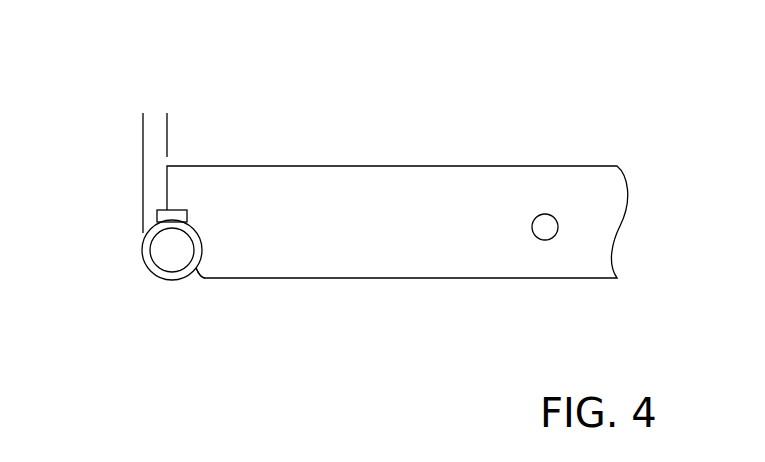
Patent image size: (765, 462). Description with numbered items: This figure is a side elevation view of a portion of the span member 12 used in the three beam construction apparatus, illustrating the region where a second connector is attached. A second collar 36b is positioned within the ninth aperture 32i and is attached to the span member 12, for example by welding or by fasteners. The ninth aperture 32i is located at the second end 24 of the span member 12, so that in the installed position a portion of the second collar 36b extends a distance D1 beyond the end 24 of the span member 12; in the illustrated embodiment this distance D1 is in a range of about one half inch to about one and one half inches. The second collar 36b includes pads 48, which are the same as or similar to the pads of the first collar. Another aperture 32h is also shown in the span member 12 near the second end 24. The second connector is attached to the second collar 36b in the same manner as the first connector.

The span member 12 is at (594, 72).
The second end 24 is at (183, 166).
The distance D1 is at (192, 132).
The pads 48 is at (190, 218).
The second collar 36b is at (141, 250).
The ninth aperture 32i is at (203, 279).
The eighth aperture 32h is at (548, 240).